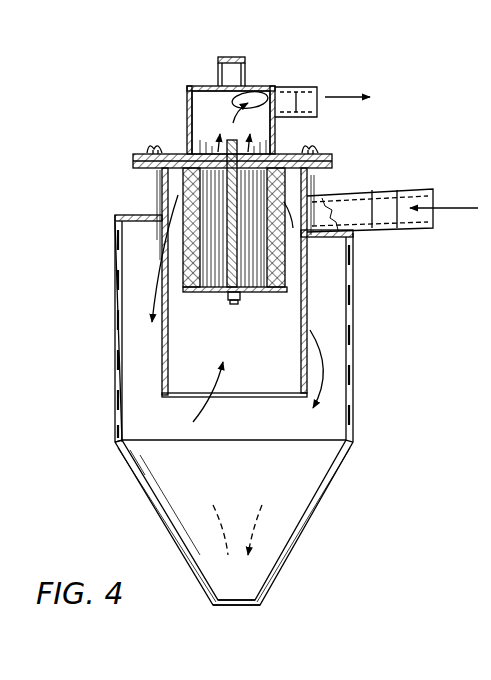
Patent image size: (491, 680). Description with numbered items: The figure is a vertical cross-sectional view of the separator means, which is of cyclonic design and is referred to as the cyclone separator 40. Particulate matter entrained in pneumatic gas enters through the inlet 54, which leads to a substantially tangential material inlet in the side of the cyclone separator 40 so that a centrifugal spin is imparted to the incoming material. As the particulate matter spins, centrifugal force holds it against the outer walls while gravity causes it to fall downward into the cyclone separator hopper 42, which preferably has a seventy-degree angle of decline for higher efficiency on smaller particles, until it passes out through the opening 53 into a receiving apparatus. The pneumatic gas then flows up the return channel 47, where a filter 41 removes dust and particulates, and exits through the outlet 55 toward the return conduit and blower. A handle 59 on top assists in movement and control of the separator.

The cyclone separator 40 is at (382, 397).
The filter 41 is at (197, 189).
The cyclone separator hopper 42 is at (303, 530).
The return channel 47 is at (181, 347).
The opening 53 is at (236, 613).
The inlet 54 is at (420, 222).
The outlet 55 is at (300, 87).
The handle 59 is at (237, 55).